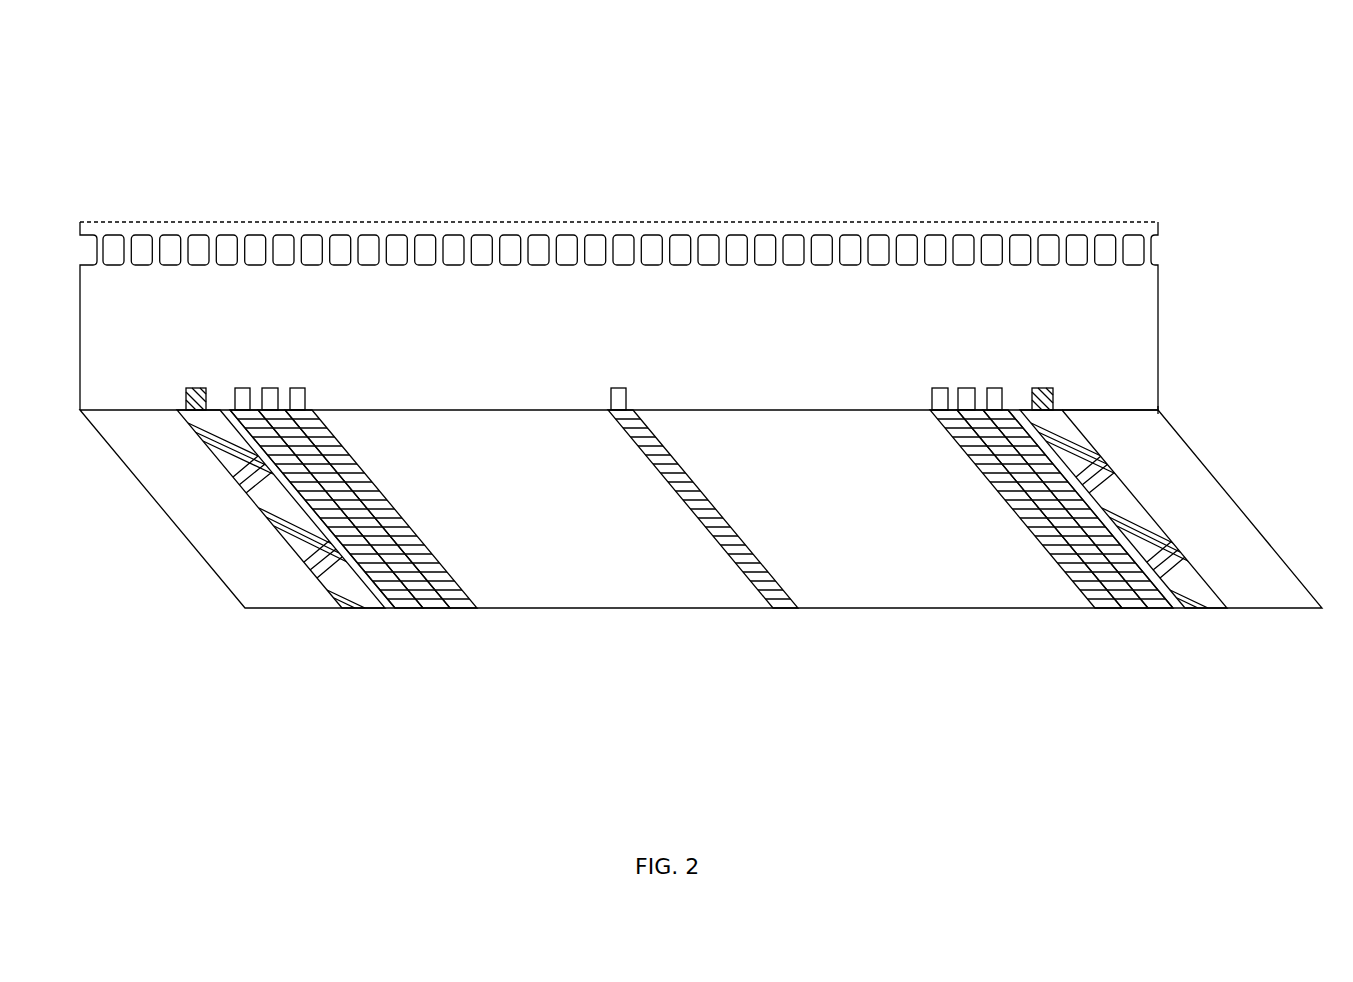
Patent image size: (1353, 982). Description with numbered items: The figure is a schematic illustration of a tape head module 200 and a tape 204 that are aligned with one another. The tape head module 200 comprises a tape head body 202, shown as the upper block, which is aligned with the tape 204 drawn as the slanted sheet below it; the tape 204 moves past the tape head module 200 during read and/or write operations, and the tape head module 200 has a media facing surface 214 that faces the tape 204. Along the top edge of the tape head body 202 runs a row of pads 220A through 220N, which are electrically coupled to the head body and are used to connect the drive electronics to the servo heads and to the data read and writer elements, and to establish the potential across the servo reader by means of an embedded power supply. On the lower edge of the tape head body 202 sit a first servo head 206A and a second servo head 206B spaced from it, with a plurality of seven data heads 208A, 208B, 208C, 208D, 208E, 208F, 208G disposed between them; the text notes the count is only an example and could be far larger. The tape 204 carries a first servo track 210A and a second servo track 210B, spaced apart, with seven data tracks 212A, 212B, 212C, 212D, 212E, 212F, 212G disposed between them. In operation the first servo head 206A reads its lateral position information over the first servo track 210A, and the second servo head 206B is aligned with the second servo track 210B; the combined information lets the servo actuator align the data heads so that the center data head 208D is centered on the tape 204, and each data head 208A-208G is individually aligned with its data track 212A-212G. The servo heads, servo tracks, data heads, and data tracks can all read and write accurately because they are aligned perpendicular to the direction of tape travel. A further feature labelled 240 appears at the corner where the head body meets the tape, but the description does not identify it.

The tape head module 200 is at (192, 73).
The tape head body 202 is at (1158, 303).
The tape 204 is at (1243, 512).
The first servo head 206A is at (197, 388).
The second servo head 206B is at (1041, 388).
The data head 208A is at (243, 388).
The data head 208B is at (270, 388).
The data head 208C is at (296, 388).
The center data head 208D is at (618, 388).
The data head 208E is at (941, 388).
The data head 208F is at (966, 388).
The data head 208G is at (993, 388).
The first servo track 210A is at (363, 610).
The second servo track 210B is at (1203, 610).
The data track 212A is at (410, 610).
The data track 212B is at (435, 610).
The data track 212C is at (462, 610).
The data track 212D is at (786, 610).
The data track 212E is at (1107, 610).
The data track 212F is at (1133, 610).
The data track 212G is at (1160, 610).
The media facing surface 214 is at (1110, 410).
The pad 220A is at (173, 235).
The pad 220N is at (1078, 235).
The edge 240 is at (1158, 410).